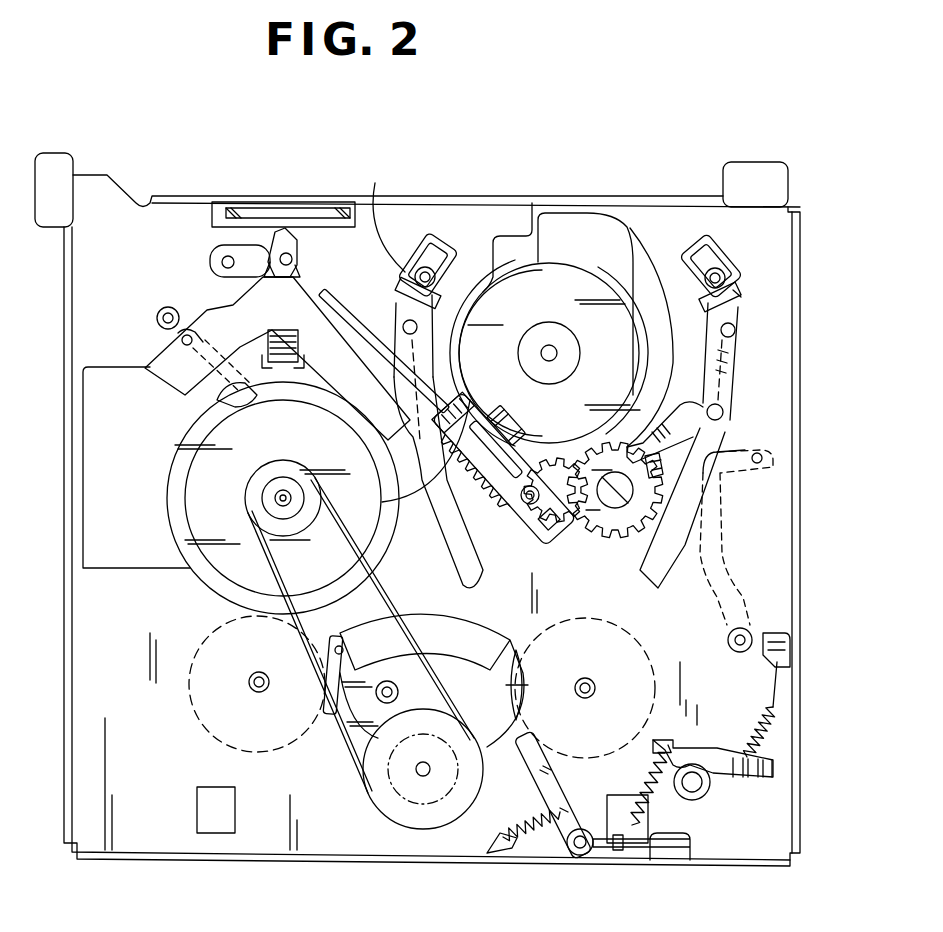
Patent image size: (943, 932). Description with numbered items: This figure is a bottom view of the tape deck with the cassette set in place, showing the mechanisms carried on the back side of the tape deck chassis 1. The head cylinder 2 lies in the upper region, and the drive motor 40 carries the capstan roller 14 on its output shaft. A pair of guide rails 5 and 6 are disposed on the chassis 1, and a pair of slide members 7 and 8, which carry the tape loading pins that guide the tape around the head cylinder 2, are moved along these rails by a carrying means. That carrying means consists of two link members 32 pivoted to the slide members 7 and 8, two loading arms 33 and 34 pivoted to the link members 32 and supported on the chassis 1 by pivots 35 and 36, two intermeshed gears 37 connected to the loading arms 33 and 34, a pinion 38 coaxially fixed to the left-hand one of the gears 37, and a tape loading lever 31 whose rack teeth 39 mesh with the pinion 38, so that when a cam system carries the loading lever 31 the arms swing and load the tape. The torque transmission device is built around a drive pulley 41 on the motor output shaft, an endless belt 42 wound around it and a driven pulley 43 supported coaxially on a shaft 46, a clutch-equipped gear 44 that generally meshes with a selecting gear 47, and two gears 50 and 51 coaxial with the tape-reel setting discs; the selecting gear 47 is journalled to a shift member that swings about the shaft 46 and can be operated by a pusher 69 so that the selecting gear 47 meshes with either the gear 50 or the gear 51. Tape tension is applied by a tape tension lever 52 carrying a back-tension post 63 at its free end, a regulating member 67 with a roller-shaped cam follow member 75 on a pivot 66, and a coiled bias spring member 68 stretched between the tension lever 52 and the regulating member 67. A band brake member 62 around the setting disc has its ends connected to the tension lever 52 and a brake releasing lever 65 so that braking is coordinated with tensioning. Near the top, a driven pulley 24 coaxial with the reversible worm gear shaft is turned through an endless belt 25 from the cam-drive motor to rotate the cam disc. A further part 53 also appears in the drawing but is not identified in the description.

The tape deck chassis 1 is at (793, 547).
The head cylinder 2 is at (628, 357).
The guide rail 5 is at (730, 432).
The guide rail 6 is at (443, 543).
The slide member 7 is at (737, 293).
The slide member 8 is at (385, 210).
The capstan roller 14 is at (280, 498).
The driven pulley 24 is at (277, 210).
The endless belt 25 is at (223, 207).
The tape loading lever 31 is at (335, 297).
The link member 32 is at (410, 347).
The loading arm 33 is at (673, 430).
The loading arm 34 is at (465, 410).
The pivot 35 is at (610, 540).
The pivot 36 is at (570, 540).
The gear 37 is at (583, 440).
The pinion 38 is at (522, 425).
The rack teeth 39 is at (497, 545).
The drive motor 40 is at (223, 557).
The drive pulley 41 is at (297, 523).
The endless belt 42 is at (300, 642).
The driven pulley 43 is at (427, 820).
The gear 44 is at (387, 770).
The shaft 46 is at (420, 773).
The selecting gear 47 is at (437, 667).
The gear 50 is at (520, 690).
The gear 51 is at (325, 707).
The tape tension lever 52 is at (787, 623).
The lever 53 is at (548, 795).
The band brake member 62 is at (166, 308).
The back-tension post 63 is at (177, 342).
The brake releasing lever 65 is at (182, 413).
The pivot 66 is at (700, 793).
The regulating member 67 is at (777, 777).
The coiled bias spring member 68 is at (767, 730).
The pusher 69 is at (405, 460).
The roller-shaped cam follow member 75 is at (293, 230).